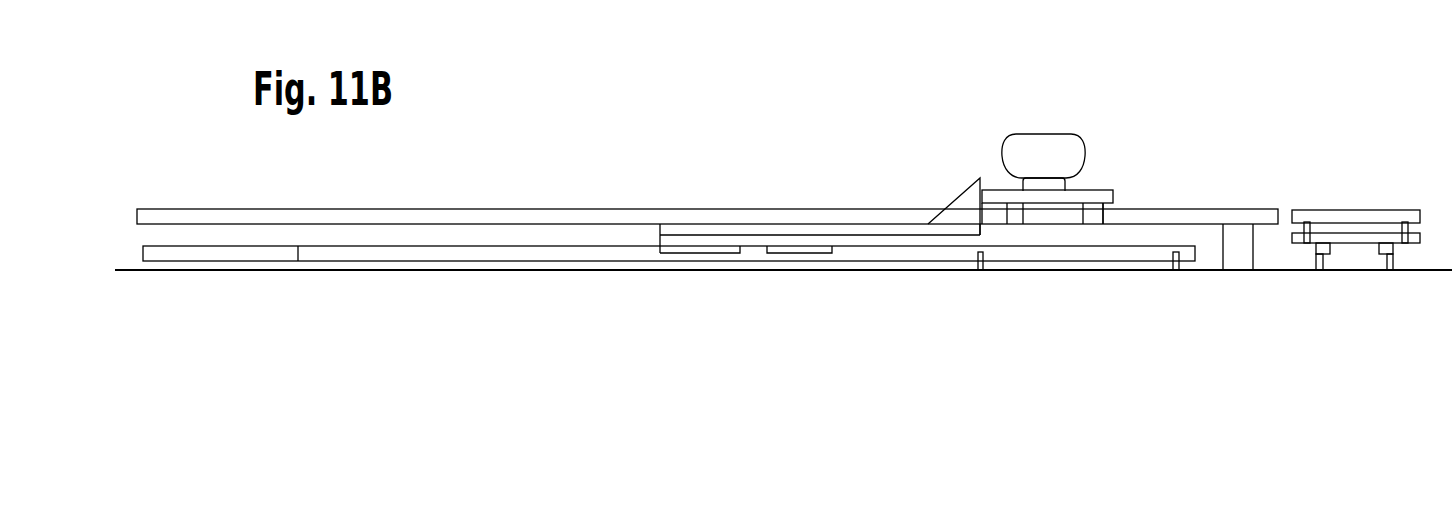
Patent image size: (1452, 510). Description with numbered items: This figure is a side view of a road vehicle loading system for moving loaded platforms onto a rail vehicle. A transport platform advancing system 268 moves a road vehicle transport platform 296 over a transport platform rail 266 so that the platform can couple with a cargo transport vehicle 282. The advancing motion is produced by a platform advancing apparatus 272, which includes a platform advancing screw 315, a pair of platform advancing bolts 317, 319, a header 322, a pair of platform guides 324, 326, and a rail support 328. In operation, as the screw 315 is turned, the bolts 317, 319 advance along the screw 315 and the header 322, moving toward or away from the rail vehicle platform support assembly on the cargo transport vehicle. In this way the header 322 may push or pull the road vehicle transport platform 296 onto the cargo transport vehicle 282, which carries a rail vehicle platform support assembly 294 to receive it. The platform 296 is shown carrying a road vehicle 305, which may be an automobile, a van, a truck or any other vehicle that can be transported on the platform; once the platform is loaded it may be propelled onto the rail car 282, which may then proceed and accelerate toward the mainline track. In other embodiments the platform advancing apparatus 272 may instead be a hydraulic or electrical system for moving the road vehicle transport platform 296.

The transport platform rail 266 is at (363, 209).
The platform advancing screw 315 is at (430, 253).
The transport platform advancing system 268 is at (623, 278).
The platform advancing bolt 317 is at (703, 236).
The platform advancing bolt 319 is at (798, 240).
The platform advancing apparatus 272 is at (903, 280).
The header 322 is at (957, 202).
The road vehicle transport platform 296 is at (1101, 191).
The platform guide 324 is at (1015, 218).
The platform guide 326 is at (1095, 215).
The road vehicle 305 is at (1038, 148).
The rail support 328 is at (1233, 260).
The rail vehicle platform support assembly 294 is at (1345, 205).
The cargo transport vehicle 282 is at (1402, 243).